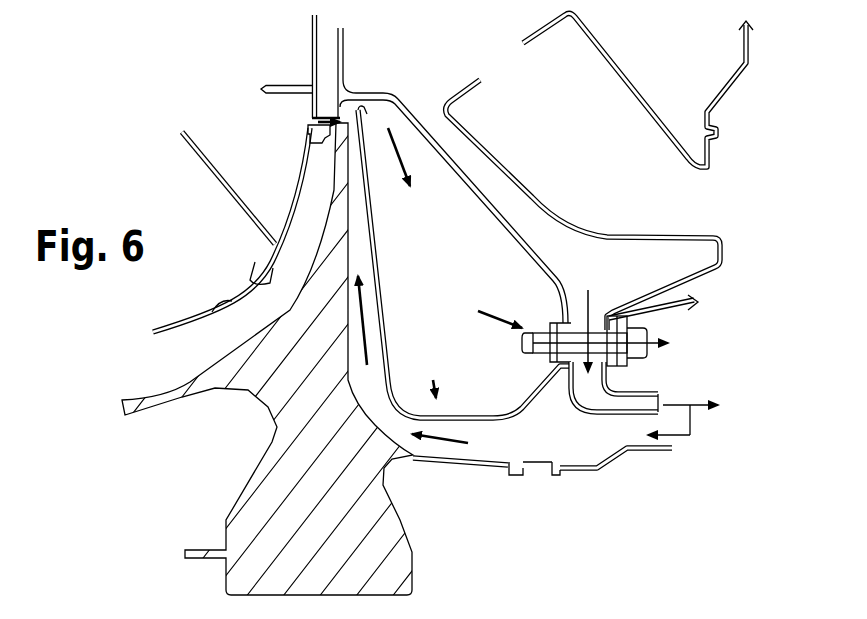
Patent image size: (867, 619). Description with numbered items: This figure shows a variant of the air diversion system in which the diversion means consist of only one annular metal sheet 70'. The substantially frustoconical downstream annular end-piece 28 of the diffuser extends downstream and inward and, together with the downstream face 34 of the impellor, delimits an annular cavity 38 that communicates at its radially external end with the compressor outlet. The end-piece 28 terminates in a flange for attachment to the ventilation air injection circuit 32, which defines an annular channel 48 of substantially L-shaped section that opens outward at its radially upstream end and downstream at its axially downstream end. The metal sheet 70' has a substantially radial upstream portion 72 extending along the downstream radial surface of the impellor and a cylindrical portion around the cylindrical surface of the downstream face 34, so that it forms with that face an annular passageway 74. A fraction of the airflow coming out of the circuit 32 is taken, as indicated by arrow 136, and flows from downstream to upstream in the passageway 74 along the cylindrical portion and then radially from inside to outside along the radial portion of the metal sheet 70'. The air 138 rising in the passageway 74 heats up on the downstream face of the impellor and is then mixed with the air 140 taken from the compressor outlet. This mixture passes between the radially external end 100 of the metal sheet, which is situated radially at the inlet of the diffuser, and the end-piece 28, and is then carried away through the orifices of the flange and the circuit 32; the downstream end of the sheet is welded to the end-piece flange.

The radially external end 100 is at (376, 125).
The air taken from the outlet of the compressor 140 is at (310, 132).
The downstream annular end-piece 28 is at (492, 234).
The downstream face 34 is at (350, 308).
The annular cavity 38 is at (439, 210).
The upstream portion 72 is at (390, 344).
The air 138 is at (373, 357).
The annular passageway 74 is at (368, 398).
The annular metal sheet 70' is at (458, 383).
The annular channel 48 is at (542, 442).
The ventilation air injection circuit 32 is at (650, 382).
The arrow 136 is at (680, 438).